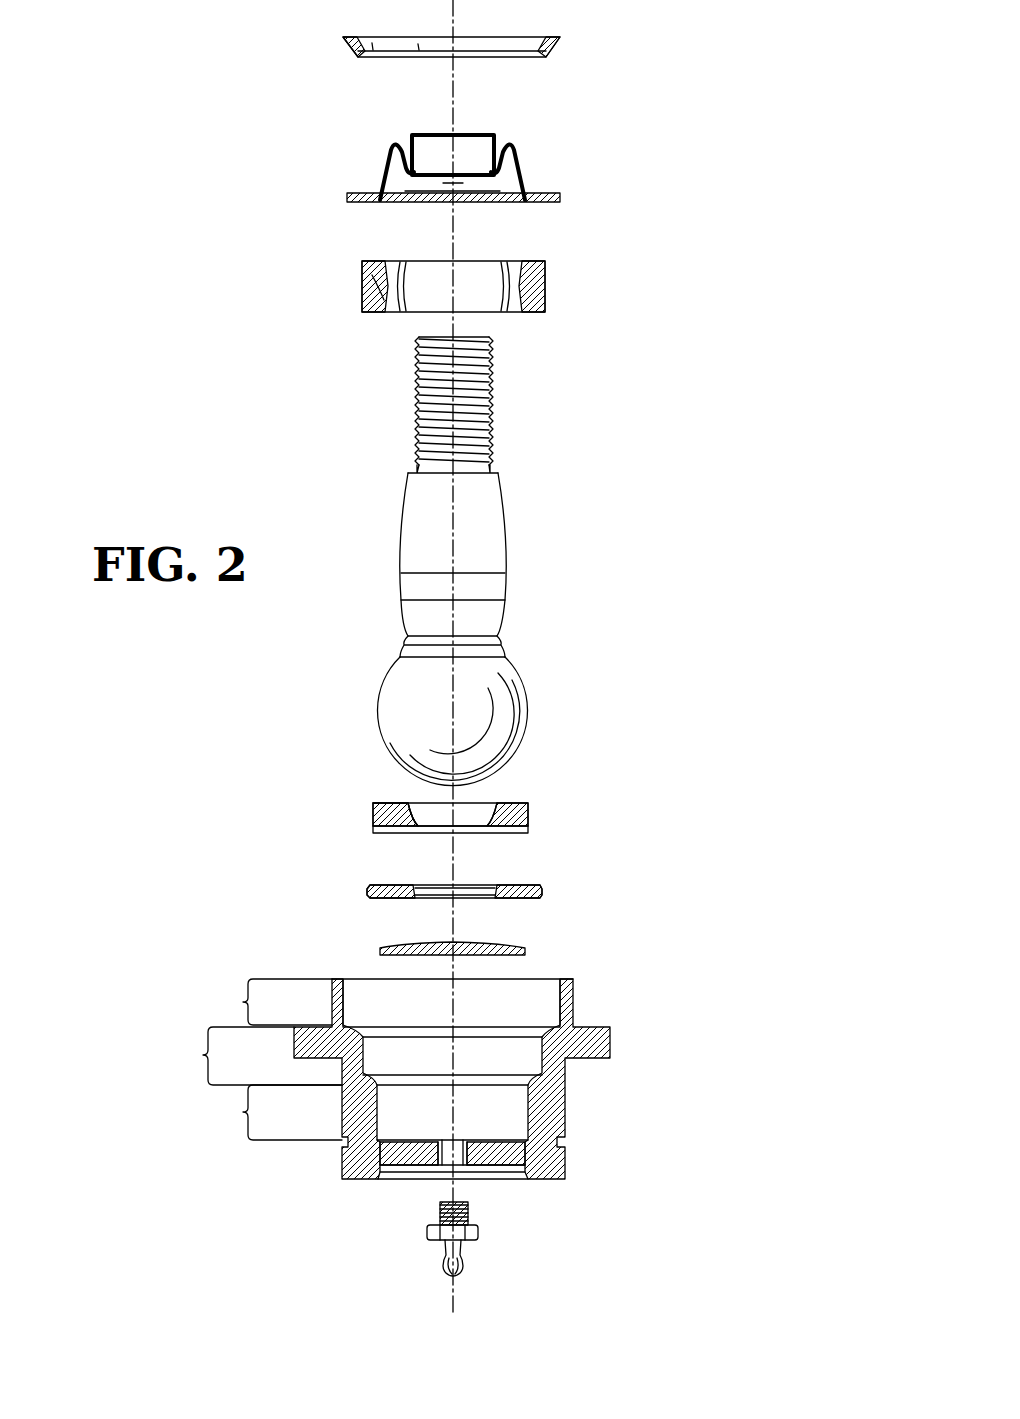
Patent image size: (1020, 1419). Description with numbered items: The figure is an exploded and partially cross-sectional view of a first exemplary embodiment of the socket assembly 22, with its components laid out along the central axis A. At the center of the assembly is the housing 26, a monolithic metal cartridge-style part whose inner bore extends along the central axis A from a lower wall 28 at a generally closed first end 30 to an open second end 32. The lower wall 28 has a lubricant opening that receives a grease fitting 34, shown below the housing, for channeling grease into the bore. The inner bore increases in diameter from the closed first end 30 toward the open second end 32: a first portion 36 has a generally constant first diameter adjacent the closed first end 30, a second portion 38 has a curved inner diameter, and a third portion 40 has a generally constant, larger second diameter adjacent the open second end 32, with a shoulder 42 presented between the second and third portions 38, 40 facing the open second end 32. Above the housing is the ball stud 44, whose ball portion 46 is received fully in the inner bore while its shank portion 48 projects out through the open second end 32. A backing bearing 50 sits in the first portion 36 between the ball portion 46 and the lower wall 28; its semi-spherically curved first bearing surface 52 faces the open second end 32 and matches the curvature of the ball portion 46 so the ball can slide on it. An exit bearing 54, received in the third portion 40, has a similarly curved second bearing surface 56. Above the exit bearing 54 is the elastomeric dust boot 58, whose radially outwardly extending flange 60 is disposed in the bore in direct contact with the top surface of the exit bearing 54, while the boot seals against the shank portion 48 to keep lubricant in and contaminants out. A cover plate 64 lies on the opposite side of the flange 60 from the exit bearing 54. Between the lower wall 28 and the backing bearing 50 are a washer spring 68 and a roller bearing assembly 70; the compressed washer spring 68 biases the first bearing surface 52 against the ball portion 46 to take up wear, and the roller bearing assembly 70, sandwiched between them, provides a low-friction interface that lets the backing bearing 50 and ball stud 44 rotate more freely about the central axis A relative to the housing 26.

The socket assembly 22 is at (664, 540).
The housing 26 is at (486, 1095).
The lower wall 28 is at (412, 1178).
The closed first end 30 is at (500, 1135).
The open second end 32 is at (532, 978).
The grease fitting 34 is at (462, 1258).
The first portion 36 is at (280, 1112).
The second portion 38 is at (260, 1056).
The third portion 40 is at (275, 1002).
The shoulder 42 is at (550, 1022).
The ball stud 44 is at (474, 561).
The ball portion 46 is at (461, 719).
The shank portion 48 is at (428, 548).
The backing bearing 50 is at (528, 818).
The first bearing surface 52 is at (408, 808).
The exit bearing 54 is at (545, 279).
The second bearing surface 56 is at (388, 286).
The dust boot 58 is at (522, 168).
The flange 60 is at (548, 202).
The cover plate 64 is at (560, 46).
The washer spring 68 is at (395, 945).
The roller bearing assembly 70 is at (545, 886).
The central axis A is at (455, 6).